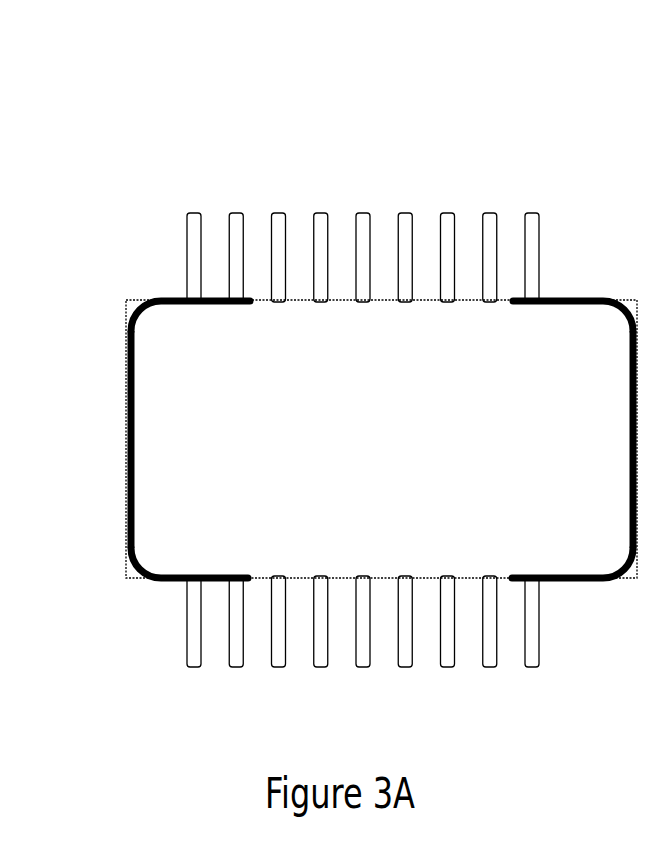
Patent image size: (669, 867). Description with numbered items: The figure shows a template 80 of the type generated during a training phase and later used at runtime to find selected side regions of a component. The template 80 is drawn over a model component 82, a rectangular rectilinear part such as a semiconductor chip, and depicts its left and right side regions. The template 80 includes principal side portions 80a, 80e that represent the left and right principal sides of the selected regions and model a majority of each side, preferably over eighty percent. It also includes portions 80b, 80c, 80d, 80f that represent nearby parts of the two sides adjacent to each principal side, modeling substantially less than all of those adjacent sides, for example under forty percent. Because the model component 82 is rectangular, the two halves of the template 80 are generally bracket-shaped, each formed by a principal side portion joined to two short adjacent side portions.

The template 80 is at (236, 190).
The principal side portion 80a is at (135, 432).
The adjacent side portion 80b is at (223, 303).
The adjacent side portion 80c is at (217, 577).
The adjacent side portion 80d is at (570, 303).
The principal side portion 80e is at (630, 452).
The adjacent side portion 80f is at (538, 578).
The model component 82 is at (460, 436).